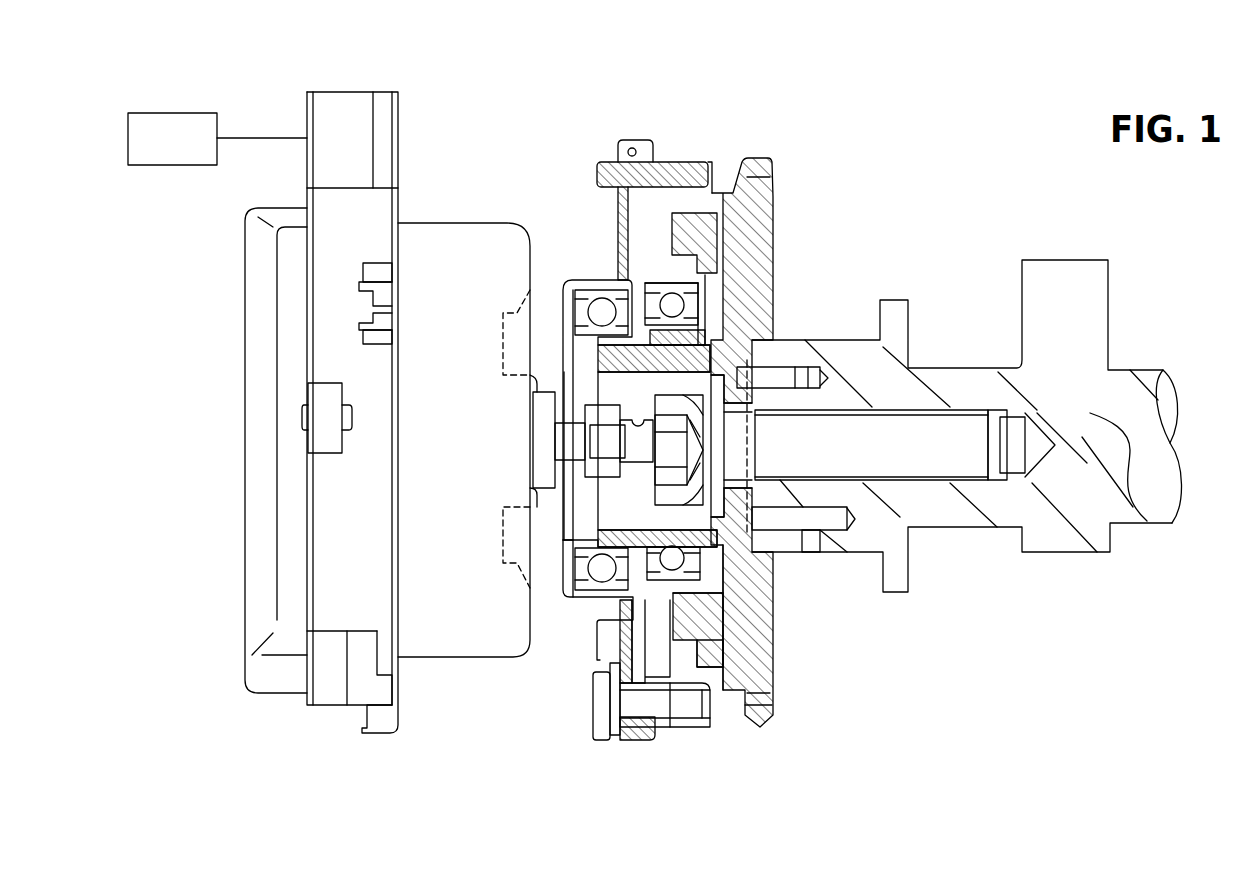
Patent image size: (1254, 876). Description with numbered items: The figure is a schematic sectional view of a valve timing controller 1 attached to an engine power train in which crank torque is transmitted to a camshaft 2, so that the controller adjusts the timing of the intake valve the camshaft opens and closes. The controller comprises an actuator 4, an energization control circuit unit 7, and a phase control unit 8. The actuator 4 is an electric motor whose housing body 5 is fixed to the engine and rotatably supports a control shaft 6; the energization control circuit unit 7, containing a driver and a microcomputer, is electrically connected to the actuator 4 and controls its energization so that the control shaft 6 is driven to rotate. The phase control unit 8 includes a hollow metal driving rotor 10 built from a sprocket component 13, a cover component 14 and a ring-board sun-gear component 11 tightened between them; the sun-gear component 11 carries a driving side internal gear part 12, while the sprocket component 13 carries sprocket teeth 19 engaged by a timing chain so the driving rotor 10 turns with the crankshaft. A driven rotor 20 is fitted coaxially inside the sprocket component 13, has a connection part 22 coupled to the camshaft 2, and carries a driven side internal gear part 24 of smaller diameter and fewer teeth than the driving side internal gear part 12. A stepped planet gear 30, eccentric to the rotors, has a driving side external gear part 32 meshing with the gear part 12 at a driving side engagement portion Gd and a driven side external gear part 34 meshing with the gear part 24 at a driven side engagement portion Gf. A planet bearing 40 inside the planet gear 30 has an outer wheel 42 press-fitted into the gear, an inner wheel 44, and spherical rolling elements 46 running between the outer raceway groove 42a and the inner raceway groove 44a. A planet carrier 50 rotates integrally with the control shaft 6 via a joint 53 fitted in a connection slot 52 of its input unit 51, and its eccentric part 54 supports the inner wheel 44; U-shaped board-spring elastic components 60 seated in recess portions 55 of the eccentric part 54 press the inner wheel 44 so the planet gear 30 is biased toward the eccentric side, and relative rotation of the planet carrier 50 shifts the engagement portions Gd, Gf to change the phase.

The valve timing controller 1 is at (457, 70).
The camshaft 2 is at (955, 505).
The actuator 4 is at (373, 88).
The housing body 5 is at (461, 632).
The control shaft 6 is at (557, 442).
The energization control circuit unit 7 is at (206, 113).
The phase control unit 8 is at (552, 158).
The driving rotor 10 is at (658, 135).
The sun-gear component 11 is at (667, 155).
The driving side internal gear part 12 is at (653, 645).
The sprocket component 13 is at (706, 152).
The cover component 14 is at (625, 150).
The sprocket teeth 19 is at (760, 165).
The driven rotor 20 is at (757, 217).
The connection part 22 is at (757, 572).
The driven side internal gear part 24 is at (747, 640).
The planet gear 30 is at (715, 262).
The driving side external gear part 32 is at (700, 633).
The driven side external gear part 34 is at (720, 622).
The planet bearing 40 is at (665, 300).
The outer wheel 42 is at (633, 743).
The outer raceway groove 42a is at (690, 285).
The inner wheel 44 is at (628, 605).
The inner raceway groove 44a is at (668, 228).
The spherical rolling elements 46 is at (604, 163).
The planet carrier 50 is at (600, 562).
The input unit 51 is at (552, 495).
The connection slot 52 is at (648, 295).
The joint 53 is at (572, 557).
The eccentric part 54 is at (730, 598).
The recess portion 55 is at (700, 318).
The elastic component 60 is at (680, 300).
The driving side engagement portion Gd is at (706, 167).
The driven side engagement portion Gf is at (738, 183).